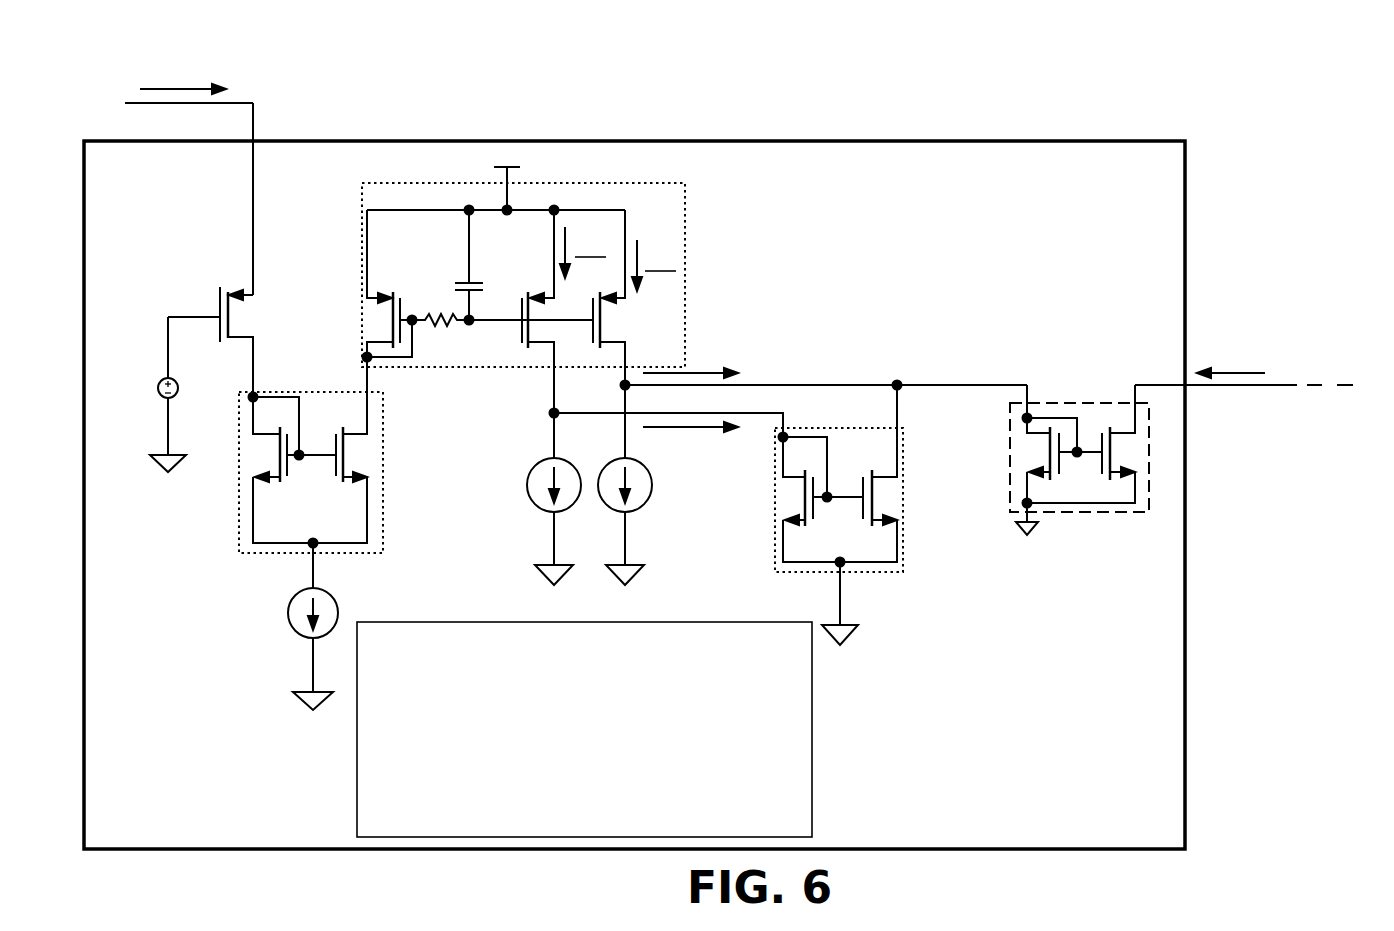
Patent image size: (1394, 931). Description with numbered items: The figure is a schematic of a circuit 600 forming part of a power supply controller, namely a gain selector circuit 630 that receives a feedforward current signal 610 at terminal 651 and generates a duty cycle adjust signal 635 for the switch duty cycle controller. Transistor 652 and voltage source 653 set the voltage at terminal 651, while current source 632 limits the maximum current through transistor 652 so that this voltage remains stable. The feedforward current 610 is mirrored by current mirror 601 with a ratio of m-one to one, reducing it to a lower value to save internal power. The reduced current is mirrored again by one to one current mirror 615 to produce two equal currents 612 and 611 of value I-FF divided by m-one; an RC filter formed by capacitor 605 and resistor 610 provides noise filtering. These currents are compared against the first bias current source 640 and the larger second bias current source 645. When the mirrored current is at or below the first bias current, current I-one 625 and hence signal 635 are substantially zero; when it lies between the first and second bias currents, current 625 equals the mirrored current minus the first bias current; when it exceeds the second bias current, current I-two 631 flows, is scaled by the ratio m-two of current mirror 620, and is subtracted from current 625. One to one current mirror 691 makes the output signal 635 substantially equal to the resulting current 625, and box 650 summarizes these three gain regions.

The feedforward current circuit 600 is at (633, 46).
The current mirror 601 is at (278, 383).
The capacitor 605 is at (455, 288).
The feedforward signal 610 is at (160, 70).
The mirrored current 611 is at (642, 240).
The mirrored current 612 is at (575, 212).
The one to one current mirror 615 is at (685, 200).
The current mirror 620 is at (765, 462).
The current I_1 625 is at (715, 350).
The gain selector circuit 630 is at (1195, 188).
The current I_2 631 is at (712, 433).
The current source 632 is at (282, 618).
The duty cycle adjust signal 635 is at (1262, 338).
The current source I_B1 640 is at (645, 512).
The current source I_B2 645 is at (542, 508).
The box 650 is at (818, 815).
The terminal 651 is at (262, 137).
The transistor 652 is at (222, 282).
The voltage source 653 is at (152, 372).
The one to one current mirror 691 is at (1008, 432).